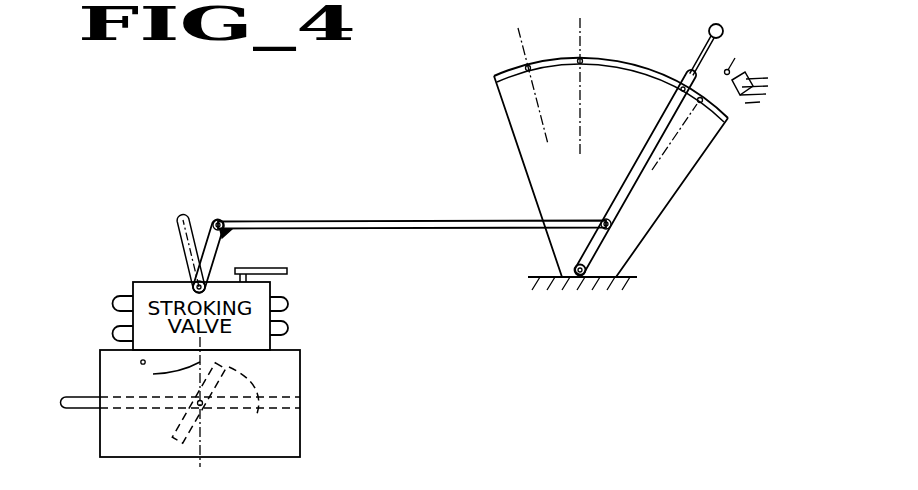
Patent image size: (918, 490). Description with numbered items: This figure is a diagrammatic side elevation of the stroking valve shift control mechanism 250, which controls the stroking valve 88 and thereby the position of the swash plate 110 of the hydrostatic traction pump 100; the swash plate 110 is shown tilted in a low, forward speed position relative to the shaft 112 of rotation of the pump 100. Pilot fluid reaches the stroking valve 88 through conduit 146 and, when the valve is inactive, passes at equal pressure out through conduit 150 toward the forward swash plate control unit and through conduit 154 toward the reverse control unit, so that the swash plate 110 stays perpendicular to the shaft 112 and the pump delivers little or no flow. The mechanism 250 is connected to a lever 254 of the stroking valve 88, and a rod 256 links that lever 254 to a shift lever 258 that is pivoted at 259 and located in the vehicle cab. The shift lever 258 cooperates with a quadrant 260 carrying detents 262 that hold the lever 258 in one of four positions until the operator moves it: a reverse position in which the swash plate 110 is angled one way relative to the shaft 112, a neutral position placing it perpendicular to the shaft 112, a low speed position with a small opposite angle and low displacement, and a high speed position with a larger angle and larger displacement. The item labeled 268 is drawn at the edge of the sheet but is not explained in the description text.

The pump stroking valve 88 is at (288, 325).
The hydrostatic traction pump 100 is at (102, 460).
The pump swash plate 110 is at (201, 403).
The shaft 112 is at (90, 408).
The conduit 146 is at (290, 299).
The conduit 150 is at (123, 338).
The conduit 154 is at (124, 300).
The stroking valve shift control mechanism 250 is at (753, 29).
The lever 254 is at (235, 228).
The rod 256 is at (403, 221).
The shift lever 258 is at (628, 178).
The pivot 259 is at (580, 282).
The quadrant 260 is at (496, 81).
The detents 262 is at (577, 59).
The cable 268 is at (704, 489).